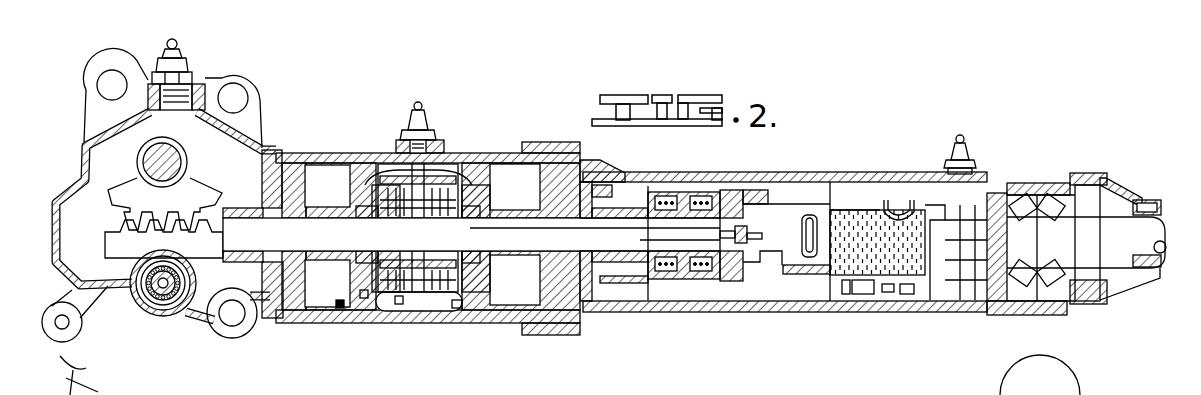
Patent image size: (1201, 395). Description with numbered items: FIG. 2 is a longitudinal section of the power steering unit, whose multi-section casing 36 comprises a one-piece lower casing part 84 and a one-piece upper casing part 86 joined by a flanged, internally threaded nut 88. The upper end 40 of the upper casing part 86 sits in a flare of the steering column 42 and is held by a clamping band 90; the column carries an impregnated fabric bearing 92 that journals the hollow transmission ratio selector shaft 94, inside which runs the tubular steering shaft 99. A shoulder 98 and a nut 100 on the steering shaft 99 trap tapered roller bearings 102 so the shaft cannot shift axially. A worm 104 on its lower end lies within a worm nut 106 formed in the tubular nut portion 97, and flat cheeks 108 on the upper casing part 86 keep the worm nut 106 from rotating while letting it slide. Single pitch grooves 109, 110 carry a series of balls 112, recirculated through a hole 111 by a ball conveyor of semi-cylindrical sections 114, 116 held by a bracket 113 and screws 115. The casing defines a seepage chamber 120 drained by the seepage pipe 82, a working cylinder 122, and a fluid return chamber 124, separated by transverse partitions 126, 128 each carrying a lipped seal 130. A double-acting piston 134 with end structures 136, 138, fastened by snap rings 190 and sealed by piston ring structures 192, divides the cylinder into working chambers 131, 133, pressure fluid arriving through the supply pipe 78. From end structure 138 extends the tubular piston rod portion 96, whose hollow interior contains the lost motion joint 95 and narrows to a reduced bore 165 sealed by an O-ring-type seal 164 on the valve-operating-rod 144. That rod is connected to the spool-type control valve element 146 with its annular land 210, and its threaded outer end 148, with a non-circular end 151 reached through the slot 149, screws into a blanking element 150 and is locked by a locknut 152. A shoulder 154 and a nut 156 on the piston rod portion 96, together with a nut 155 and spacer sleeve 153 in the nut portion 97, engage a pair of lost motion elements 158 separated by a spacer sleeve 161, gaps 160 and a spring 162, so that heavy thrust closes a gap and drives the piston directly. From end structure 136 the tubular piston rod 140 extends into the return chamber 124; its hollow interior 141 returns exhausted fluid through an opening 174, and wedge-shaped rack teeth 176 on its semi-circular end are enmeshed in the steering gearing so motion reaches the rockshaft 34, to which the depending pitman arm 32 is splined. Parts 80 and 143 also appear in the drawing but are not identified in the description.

The pitman arm 32 is at (76, 330).
The rockshaft 34 is at (180, 162).
The multi-section casing 36 is at (609, 320).
The upper end of upper casing part 40 is at (1068, 182).
The steering column 42 is at (1158, 196).
The supply pipe 78 is at (430, 122).
The grease fitting 80 is at (182, 54).
The seepage pipe 82 is at (970, 150).
The lower casing part 84 is at (415, 322).
The upper casing part 86 is at (730, 314).
The nut 88 is at (565, 150).
The clamping band 90 is at (1102, 180).
The impregnated fabric bearing 92 is at (1165, 249).
The transmission ratio selector shaft 94 is at (1163, 206).
The lost motion joint 95 is at (692, 202).
The tubular piston rod portion 96 is at (628, 216).
The tubular nut portion 97 is at (816, 182).
The shoulder 98 is at (987, 196).
The tubular steering shaft 99 is at (1086, 242).
The nut 100 is at (1107, 288).
The tapered roller bearings 102 is at (1022, 196).
The worm 104 is at (950, 320).
The worm nut 106 is at (894, 208).
The cheeks 108 is at (940, 215).
The single pitch groove 109 is at (948, 310).
The single pitch groove 110 is at (888, 200).
The hole 111 is at (830, 303).
The balls 112 is at (906, 216).
The bracket 113 is at (916, 298).
The semi-cylindrical section 114 is at (845, 300).
The screws 115 is at (898, 296).
The semi-cylindrical section 116 is at (878, 298).
The seepage collecting chamber 120 is at (808, 182).
The working cylinder 122 is at (398, 304).
The fluid return chamber 124 is at (72, 192).
The transverse partition 126 is at (283, 168).
The transverse partition 128 is at (582, 160).
The lipped seal 130 is at (417, 238).
The working chamber 131 is at (327, 283).
The working chamber 133 is at (509, 285).
The double-acting passaged piston member 134 is at (456, 312).
The piston end structure 136 is at (372, 222).
The piston end structure 138 is at (515, 187).
The tubular piston rod 140 is at (327, 186).
The hollow interior 141 is at (471, 234).
The bearing 143 is at (374, 243).
The valve-operating-rod 144 is at (515, 280).
The control valve element 146 is at (530, 213).
The threaded outer end 148 is at (722, 286).
The slot 149 is at (780, 278).
The blanking element 150 is at (737, 214).
The non-circular end 151 is at (762, 236).
The locknut 152 is at (750, 228).
The spacer sleeve 153 is at (714, 210).
The shoulder 154 is at (655, 194).
The nut 155 is at (645, 206).
The nut 156 is at (662, 288).
The lost motion elements 158 is at (706, 204).
The gaps 160 is at (676, 200).
The spacer sleeve 161 is at (665, 286).
The spring 162 is at (666, 198).
The O-ring-type seal 164 is at (770, 182).
The reduced bore 165 is at (595, 233).
The opening 174 is at (238, 212).
The rack teeth 176 is at (210, 232).
The snap rings 190 is at (340, 310).
The piston ring structure 192 is at (363, 296).
The annular land 210 is at (408, 296).